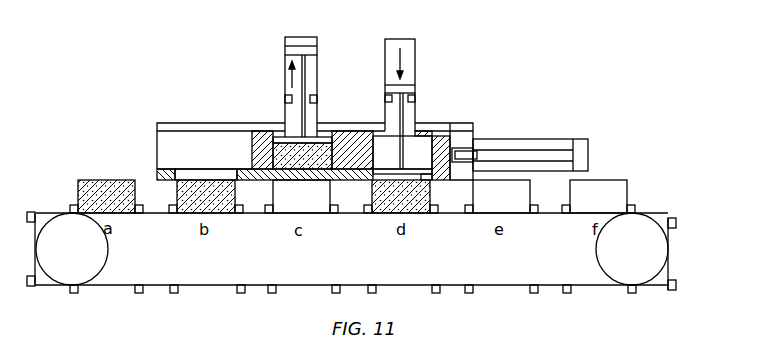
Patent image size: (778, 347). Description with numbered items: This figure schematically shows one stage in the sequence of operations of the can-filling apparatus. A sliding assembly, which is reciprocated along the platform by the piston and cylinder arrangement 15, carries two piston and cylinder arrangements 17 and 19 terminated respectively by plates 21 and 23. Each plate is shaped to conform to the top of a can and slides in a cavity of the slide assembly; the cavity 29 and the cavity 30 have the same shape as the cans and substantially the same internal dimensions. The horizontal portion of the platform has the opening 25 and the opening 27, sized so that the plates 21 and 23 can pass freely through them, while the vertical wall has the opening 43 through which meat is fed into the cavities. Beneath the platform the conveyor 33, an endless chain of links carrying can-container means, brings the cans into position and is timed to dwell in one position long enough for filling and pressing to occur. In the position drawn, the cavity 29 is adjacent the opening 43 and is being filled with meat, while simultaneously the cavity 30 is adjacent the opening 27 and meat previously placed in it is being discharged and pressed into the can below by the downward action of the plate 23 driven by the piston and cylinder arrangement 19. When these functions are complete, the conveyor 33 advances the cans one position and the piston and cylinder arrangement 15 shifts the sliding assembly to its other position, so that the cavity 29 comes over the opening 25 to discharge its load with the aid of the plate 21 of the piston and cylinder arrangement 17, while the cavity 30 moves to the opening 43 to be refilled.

The piston and cylinder arrangement 15 is at (538, 139).
The piston and cylinder arrangement 17 is at (318, 47).
The piston and cylinder arrangement 19 is at (417, 63).
The plate 21 is at (318, 137).
The plate 23 is at (422, 188).
The opening 25 is at (191, 172).
The opening 27 is at (388, 182).
The cavity 29 is at (325, 170).
The cavity 30 is at (415, 145).
The conveyor 33 is at (618, 268).
The opening 43 is at (262, 158).